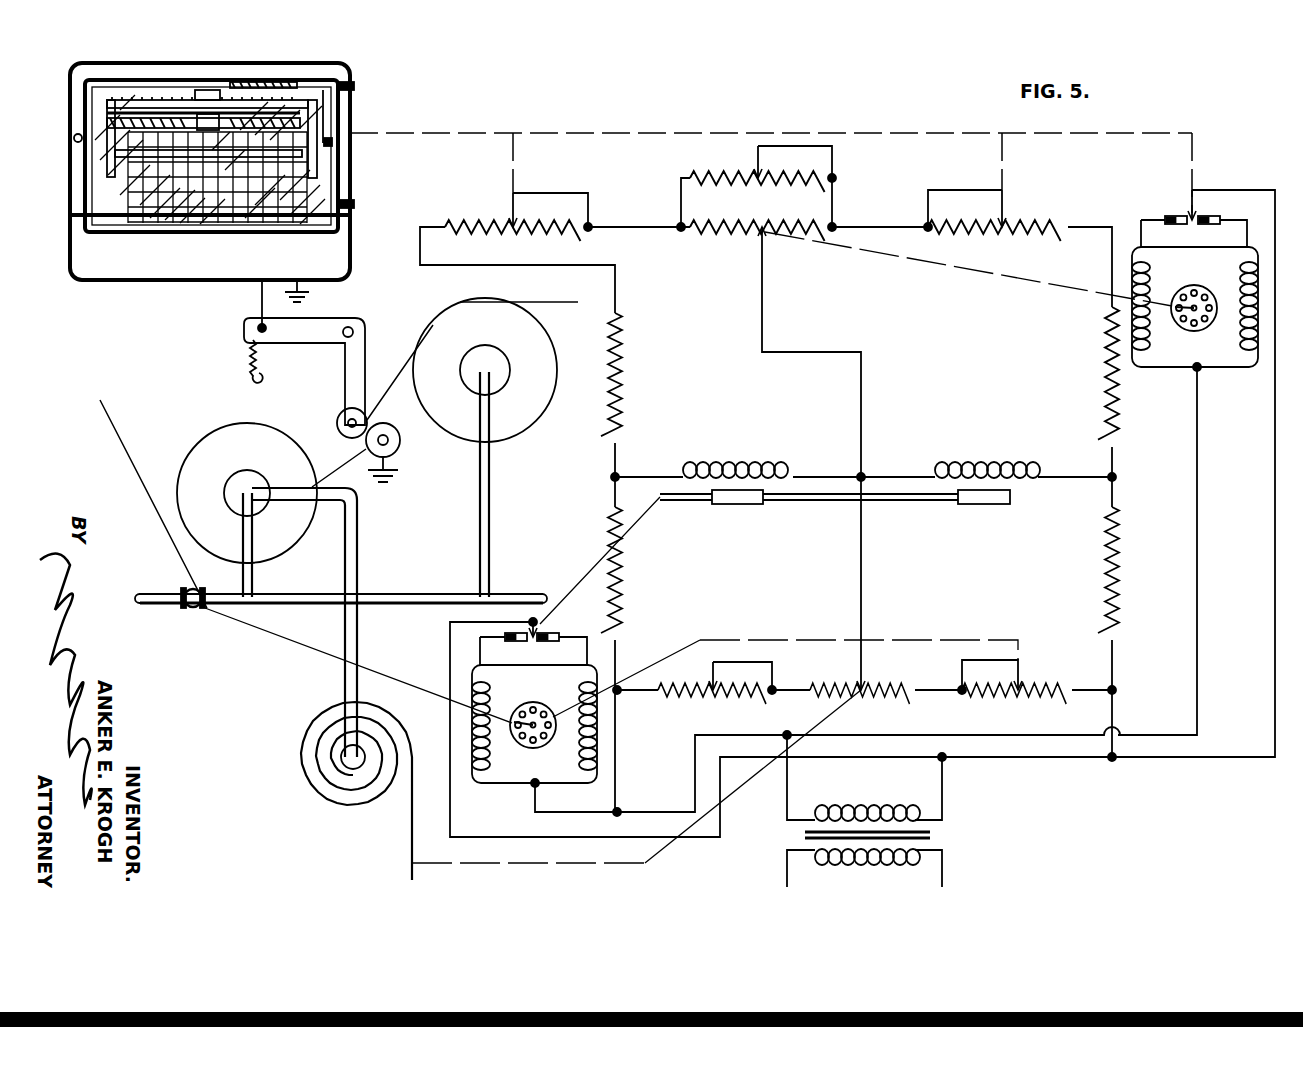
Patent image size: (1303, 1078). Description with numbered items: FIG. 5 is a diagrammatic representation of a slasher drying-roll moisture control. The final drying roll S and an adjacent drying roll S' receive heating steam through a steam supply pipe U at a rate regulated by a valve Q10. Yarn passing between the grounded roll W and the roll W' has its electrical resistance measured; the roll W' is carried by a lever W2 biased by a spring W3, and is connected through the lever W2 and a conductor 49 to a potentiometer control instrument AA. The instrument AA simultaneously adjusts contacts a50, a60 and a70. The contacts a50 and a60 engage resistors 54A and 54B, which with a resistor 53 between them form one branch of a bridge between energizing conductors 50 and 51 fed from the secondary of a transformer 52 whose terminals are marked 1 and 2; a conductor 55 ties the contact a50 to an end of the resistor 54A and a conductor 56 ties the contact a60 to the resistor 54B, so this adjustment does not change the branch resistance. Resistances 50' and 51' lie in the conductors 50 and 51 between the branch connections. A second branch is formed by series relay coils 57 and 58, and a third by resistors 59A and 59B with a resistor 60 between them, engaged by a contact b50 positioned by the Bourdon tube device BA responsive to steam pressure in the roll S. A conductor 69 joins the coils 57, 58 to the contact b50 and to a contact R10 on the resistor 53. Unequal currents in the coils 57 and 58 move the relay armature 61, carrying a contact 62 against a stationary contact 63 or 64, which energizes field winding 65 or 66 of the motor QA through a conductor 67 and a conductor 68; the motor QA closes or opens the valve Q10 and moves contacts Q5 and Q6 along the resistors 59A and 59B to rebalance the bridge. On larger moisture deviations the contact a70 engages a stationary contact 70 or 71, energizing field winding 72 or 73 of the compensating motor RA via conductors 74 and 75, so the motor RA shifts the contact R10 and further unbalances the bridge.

The potentiometer control instrument AA is at (72, 136).
The conductor 49 is at (258, 304).
The spring W3 is at (250, 362).
The lever W2 is at (312, 336).
The roll W' is at (333, 414).
The roll W is at (398, 452).
The final drying roll S is at (244, 502).
The adjacent drying roll S' is at (478, 447).
The steam supply pipe U is at (300, 598).
The valve Q10 is at (190, 590).
The Bourdon tube device BA is at (328, 712).
The conductor 67 is at (448, 650).
The movable contact 62 is at (548, 627).
The stationary contact 63 is at (516, 642).
The stationary contact 64 is at (548, 642).
The motor QA is at (534, 712).
The field winding 65 is at (489, 752).
The field winding 66 is at (582, 752).
The conductor 68 is at (532, 798).
The energizing conductor 50 is at (644, 618).
The resistance 50' is at (645, 473).
The energizing conductor 51 is at (1085, 590).
The resistance 51' is at (1082, 470).
The resistor 53 is at (712, 232).
The contact R10 is at (758, 236).
The resistor 54A is at (530, 230).
The conductor 55 is at (545, 193).
The conductor 56 is at (940, 190).
The resistor 54B is at (985, 230).
The contact a50 is at (510, 222).
The contact a60 is at (1007, 220).
The contact a70 is at (1188, 215).
The stationary contact 70 is at (1208, 225).
The stationary contact 71 is at (1176, 225).
The field winding 72 is at (1242, 333).
The field winding 73 is at (1150, 333).
The compensating motor RA is at (1195, 295).
The conductor 74 is at (1195, 412).
The conductor 75 is at (1273, 412).
The relay coil 57 is at (728, 470).
The relay coil 58 is at (970, 470).
The relay armature 61 is at (816, 502).
The conductor 69 is at (858, 412).
The resistor 59A is at (758, 695).
The resistor 59B is at (990, 695).
The resistor 60 is at (893, 690).
The contact Q5 is at (710, 686).
The contact Q6 is at (1020, 684).
The contact b50 is at (857, 686).
The transformer 52 is at (803, 836).
The supply terminal 1 is at (787, 878).
The supply terminal 2 is at (941, 878).